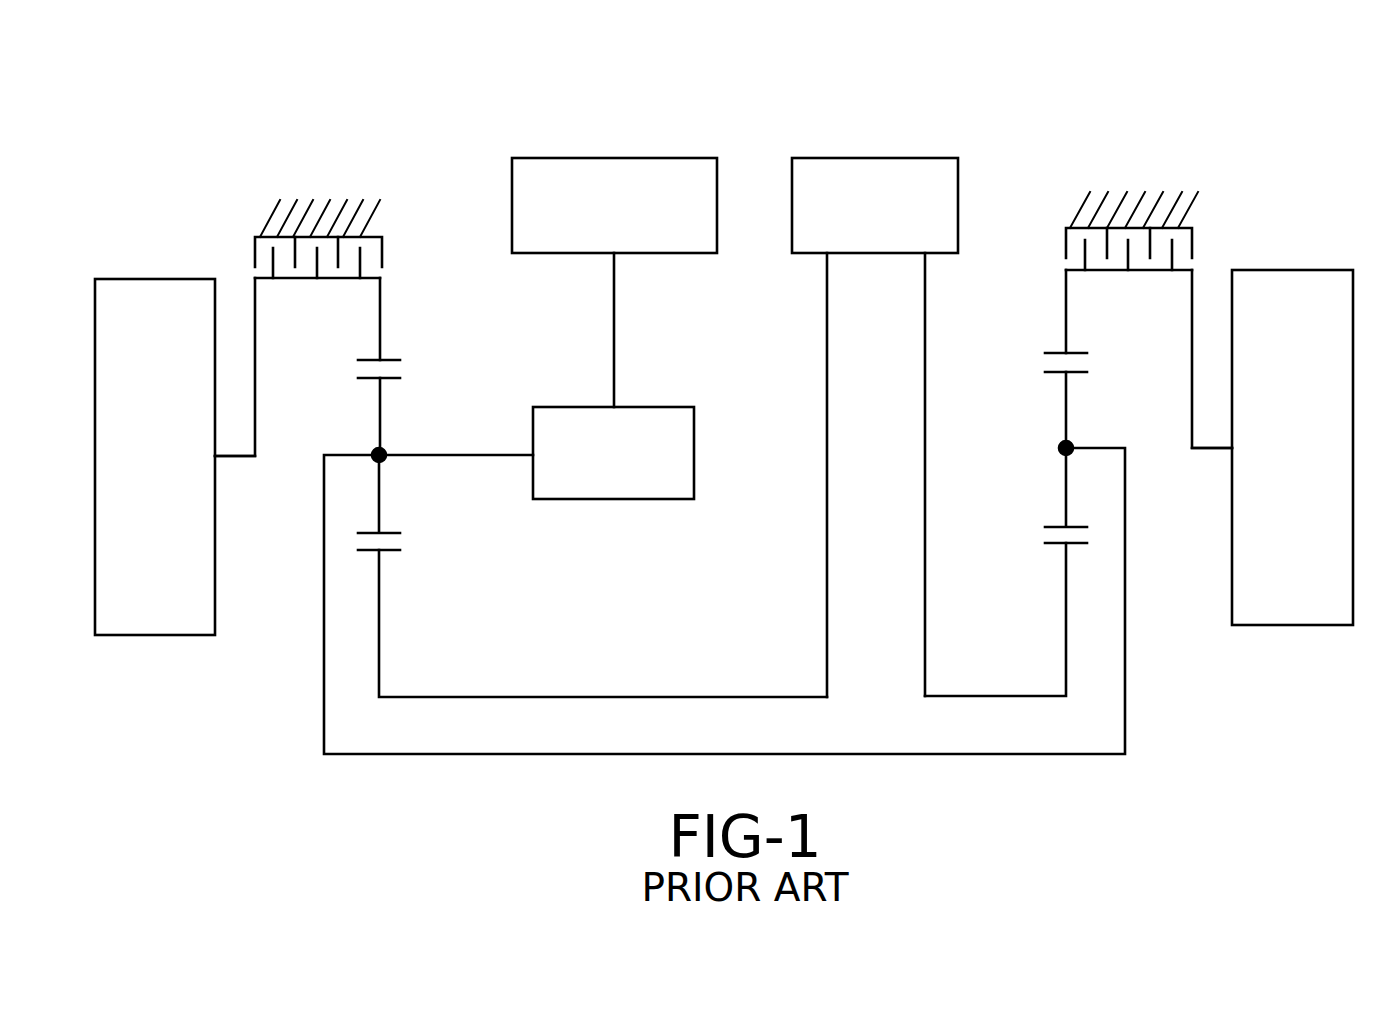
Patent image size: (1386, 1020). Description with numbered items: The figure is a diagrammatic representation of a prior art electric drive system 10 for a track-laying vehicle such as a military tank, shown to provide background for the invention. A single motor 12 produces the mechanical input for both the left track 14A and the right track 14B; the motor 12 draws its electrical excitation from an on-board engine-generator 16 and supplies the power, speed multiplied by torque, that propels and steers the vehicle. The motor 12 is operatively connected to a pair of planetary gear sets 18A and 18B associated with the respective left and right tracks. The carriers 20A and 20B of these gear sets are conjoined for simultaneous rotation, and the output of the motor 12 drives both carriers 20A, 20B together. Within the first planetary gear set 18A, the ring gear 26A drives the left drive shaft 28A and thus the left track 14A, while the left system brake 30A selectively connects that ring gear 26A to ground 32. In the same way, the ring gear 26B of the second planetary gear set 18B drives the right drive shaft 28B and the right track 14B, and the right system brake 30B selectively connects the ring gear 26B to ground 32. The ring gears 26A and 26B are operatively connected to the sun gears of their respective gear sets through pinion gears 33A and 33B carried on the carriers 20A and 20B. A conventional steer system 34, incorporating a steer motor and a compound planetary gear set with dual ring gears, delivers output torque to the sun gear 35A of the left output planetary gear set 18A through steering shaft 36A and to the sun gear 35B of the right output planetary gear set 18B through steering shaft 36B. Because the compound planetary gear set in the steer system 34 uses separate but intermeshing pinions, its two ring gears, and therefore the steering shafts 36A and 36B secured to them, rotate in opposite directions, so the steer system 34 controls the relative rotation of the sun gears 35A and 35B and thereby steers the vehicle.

The electric drive system 10 is at (726, 84).
The motor 12 is at (667, 407).
The left track 14A is at (187, 278).
The right track 14B is at (1260, 269).
The engine-generator 16 is at (590, 158).
The first planetary gear set 18A is at (404, 326).
The second planetary gear set 18B is at (1040, 320).
The carrier 20A is at (337, 455).
The carrier 20B is at (1112, 448).
The ring gear 26A is at (380, 328).
The ring gear 26B is at (1067, 321).
The left drive shaft 28A is at (237, 458).
The right drive shaft 28B is at (1208, 450).
The left system brake 30A is at (249, 250).
The right system brake 30B is at (1197, 243).
The ground 32 is at (320, 208).
The pinion gear 33A is at (380, 507).
The pinion gear 33B is at (1066, 495).
The steer system 34 is at (922, 158).
The sun gear 35A is at (380, 643).
The sun gear 35B is at (1066, 583).
The steering shaft 36A is at (645, 697).
The steering shaft 36B is at (995, 696).